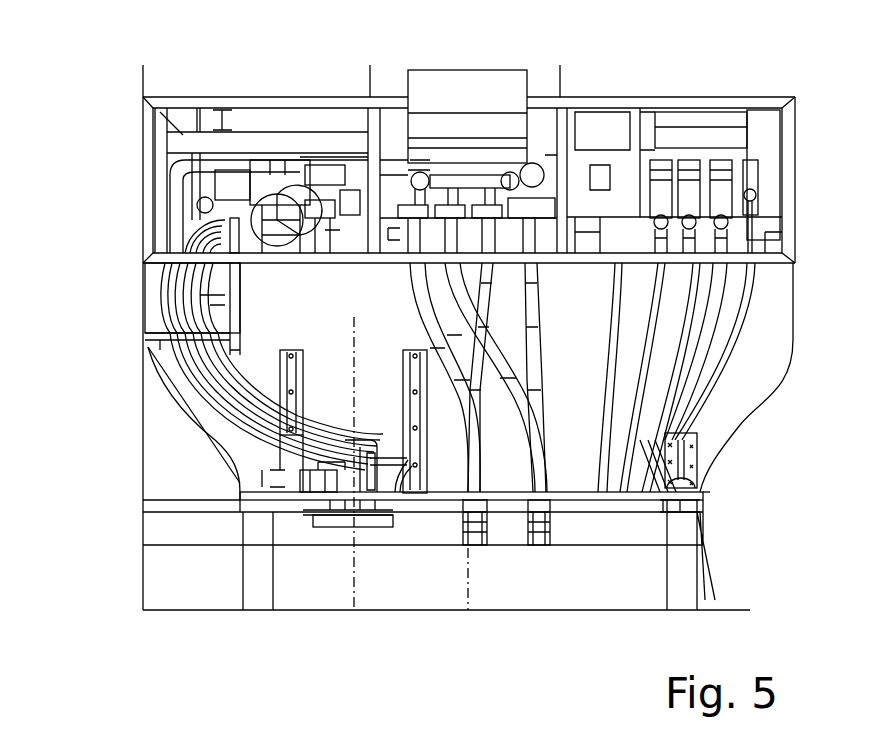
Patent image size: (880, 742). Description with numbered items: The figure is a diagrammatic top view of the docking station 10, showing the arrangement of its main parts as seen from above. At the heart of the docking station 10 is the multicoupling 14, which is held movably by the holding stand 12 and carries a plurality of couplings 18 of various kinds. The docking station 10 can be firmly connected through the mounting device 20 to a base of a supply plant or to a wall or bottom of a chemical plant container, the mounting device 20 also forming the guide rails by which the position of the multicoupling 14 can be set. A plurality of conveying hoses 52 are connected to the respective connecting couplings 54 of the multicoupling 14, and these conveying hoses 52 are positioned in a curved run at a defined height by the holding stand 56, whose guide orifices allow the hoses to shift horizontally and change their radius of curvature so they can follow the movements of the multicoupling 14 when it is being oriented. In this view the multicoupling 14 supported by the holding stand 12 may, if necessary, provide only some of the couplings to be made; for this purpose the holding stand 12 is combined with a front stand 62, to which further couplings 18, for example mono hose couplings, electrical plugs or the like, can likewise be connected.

The docking station 10 is at (127, 97).
The holding stand 12 is at (397, 470).
The multicoupling 14 is at (320, 527).
The couplings 18 is at (478, 545).
The mounting device 20 is at (275, 368).
The conveying hoses 52 is at (232, 420).
The connecting couplings 54 is at (242, 481).
The holding stand 56 is at (235, 303).
The front stand 62 is at (400, 492).